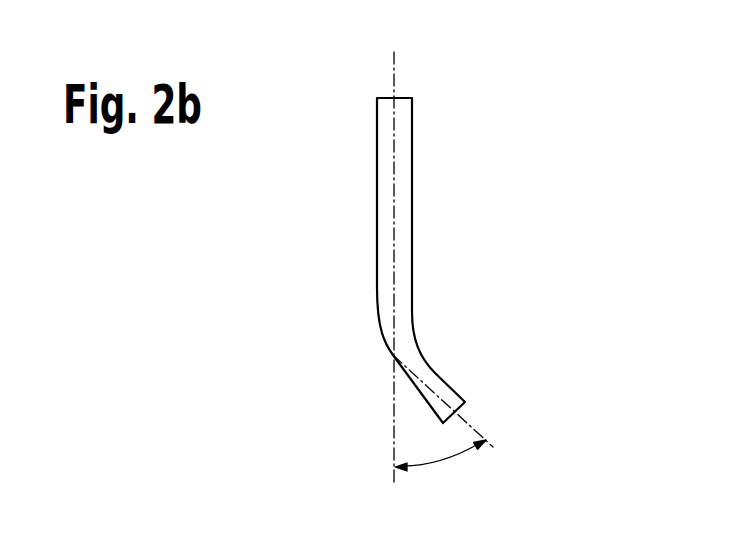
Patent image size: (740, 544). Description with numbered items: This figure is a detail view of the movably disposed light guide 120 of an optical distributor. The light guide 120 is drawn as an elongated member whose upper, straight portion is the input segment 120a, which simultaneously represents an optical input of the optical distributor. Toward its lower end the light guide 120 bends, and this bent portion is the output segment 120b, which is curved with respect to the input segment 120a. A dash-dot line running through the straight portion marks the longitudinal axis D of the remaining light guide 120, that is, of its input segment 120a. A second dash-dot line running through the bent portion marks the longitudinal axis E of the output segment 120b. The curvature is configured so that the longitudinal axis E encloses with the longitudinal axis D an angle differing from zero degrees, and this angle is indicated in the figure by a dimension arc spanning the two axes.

The light guide 120 is at (473, 250).
The input segment 120a is at (412, 112).
The output segment 120b is at (430, 373).
The longitudinal axis D is at (395, 72).
The longitudinal axis E is at (472, 424).